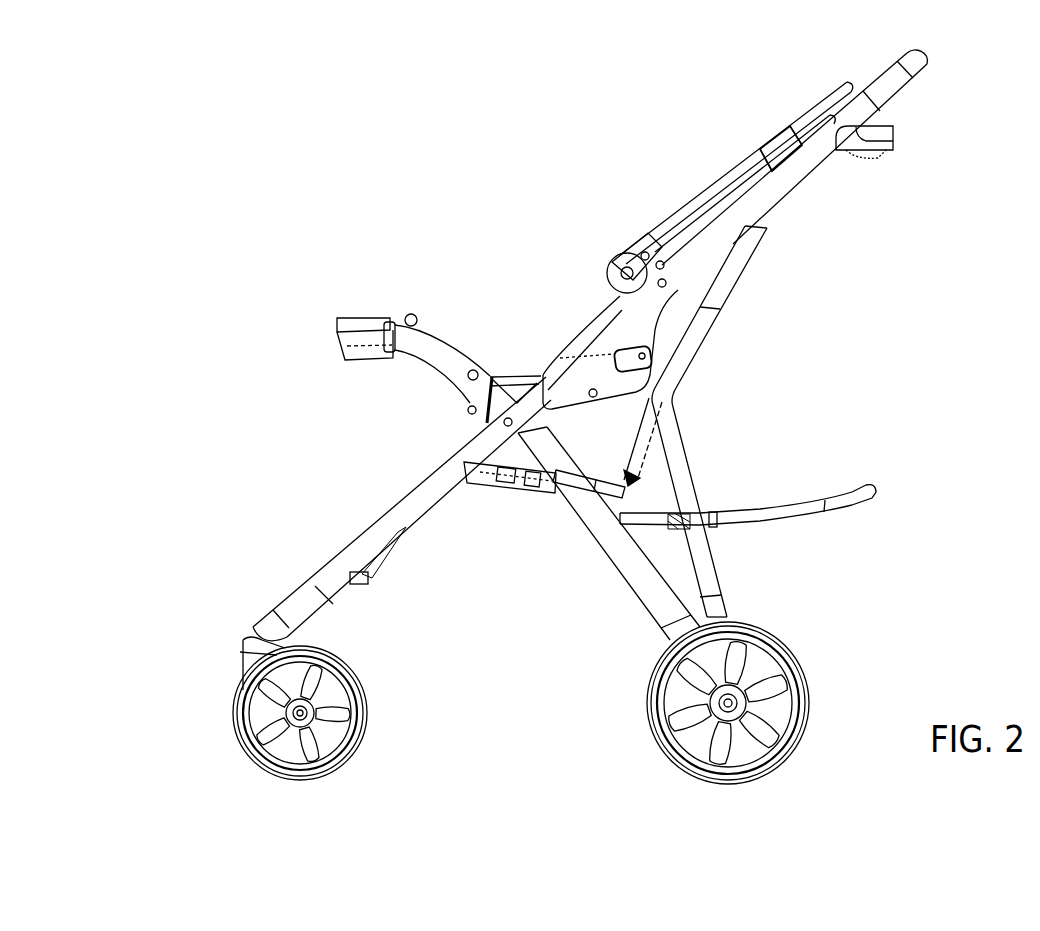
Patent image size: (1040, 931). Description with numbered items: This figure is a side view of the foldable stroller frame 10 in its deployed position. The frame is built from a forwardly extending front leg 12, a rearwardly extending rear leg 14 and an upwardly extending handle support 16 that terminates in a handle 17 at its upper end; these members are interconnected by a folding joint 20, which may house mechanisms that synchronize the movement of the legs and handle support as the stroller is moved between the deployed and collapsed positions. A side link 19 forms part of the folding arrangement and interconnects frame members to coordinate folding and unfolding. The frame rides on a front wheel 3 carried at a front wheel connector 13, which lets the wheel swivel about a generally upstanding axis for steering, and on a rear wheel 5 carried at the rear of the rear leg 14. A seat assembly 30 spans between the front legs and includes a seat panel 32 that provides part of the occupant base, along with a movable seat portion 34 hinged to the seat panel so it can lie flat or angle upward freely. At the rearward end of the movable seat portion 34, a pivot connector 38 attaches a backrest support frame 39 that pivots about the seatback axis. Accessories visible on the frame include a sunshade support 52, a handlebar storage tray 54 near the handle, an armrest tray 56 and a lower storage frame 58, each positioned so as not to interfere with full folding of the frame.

The foldable stroller frame 10 is at (220, 270).
The front leg 12 is at (400, 508).
The front wheel connector 13 is at (240, 652).
The front wheel 3 is at (363, 697).
The side link 19 is at (640, 568).
The rear leg 14 is at (712, 553).
The rear wheel 5 is at (812, 681).
The lower storage frame 58 is at (856, 503).
The pivot connector 38 is at (635, 479).
The movable seat portion 34 is at (616, 478).
The seat panel 32 is at (508, 470).
The seat assembly 30 is at (545, 503).
The armrest tray 56 is at (349, 353).
The folding joint 20 is at (605, 345).
The backrest support frame 39 is at (697, 343).
The sunshade support 52 is at (768, 140).
The handle support 16 is at (787, 180).
The handle 17 is at (925, 57).
The handlebar storage tray 54 is at (896, 150).